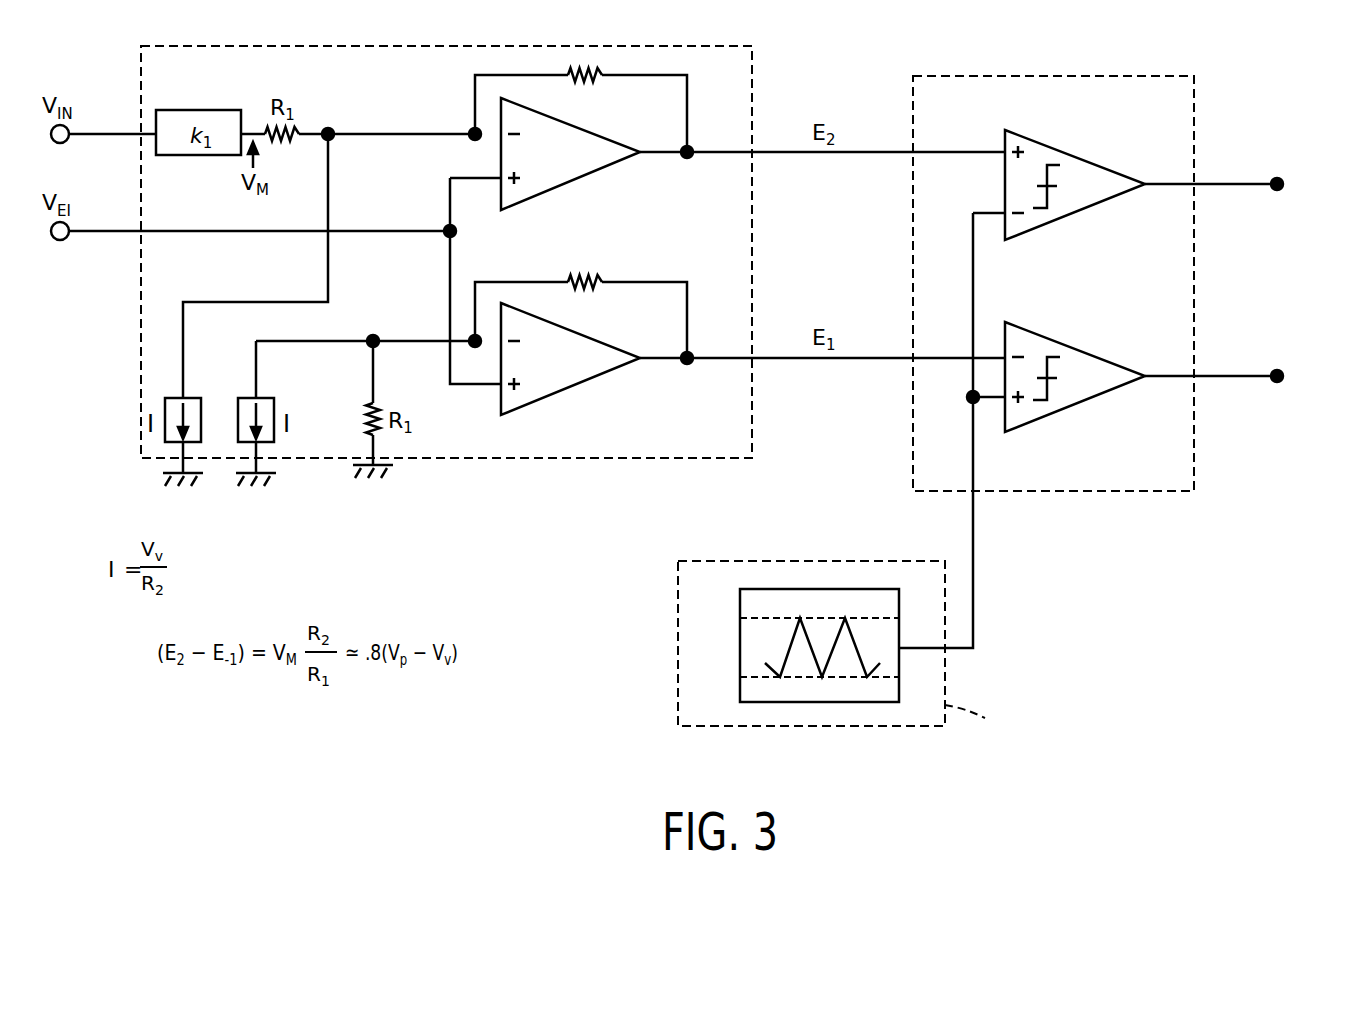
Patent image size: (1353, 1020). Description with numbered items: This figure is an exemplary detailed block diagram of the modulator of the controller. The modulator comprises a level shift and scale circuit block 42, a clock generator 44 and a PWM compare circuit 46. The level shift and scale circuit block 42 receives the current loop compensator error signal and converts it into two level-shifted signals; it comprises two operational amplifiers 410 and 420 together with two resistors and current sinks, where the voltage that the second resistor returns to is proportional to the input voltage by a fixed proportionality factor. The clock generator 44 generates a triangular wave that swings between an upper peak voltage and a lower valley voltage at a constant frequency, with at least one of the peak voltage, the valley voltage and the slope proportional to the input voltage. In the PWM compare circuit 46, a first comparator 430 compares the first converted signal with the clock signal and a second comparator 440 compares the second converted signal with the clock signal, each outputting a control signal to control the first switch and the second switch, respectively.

The level shift and scale circuit block 42 is at (752, 70).
The clock generator 44 is at (695, 560).
The PWM compare circuit 46 is at (1194, 112).
The operational amplifier 410 is at (600, 172).
The operational amplifier 420 is at (613, 373).
The first comparator 430 is at (1112, 392).
The second comparator 440 is at (1083, 210).